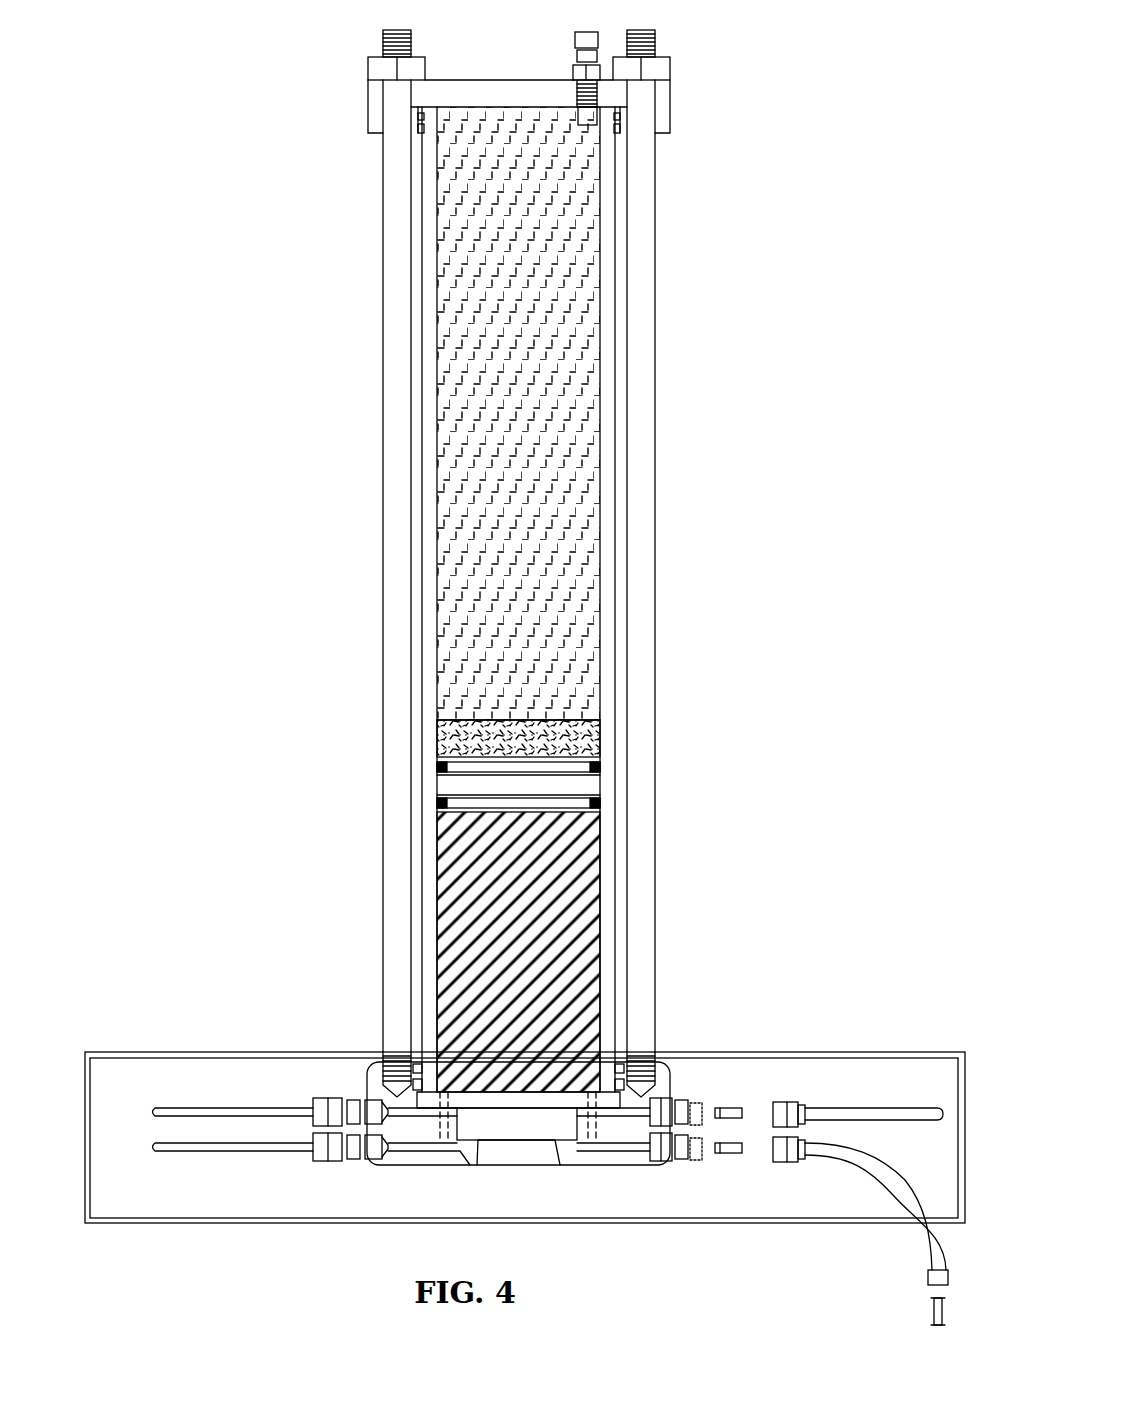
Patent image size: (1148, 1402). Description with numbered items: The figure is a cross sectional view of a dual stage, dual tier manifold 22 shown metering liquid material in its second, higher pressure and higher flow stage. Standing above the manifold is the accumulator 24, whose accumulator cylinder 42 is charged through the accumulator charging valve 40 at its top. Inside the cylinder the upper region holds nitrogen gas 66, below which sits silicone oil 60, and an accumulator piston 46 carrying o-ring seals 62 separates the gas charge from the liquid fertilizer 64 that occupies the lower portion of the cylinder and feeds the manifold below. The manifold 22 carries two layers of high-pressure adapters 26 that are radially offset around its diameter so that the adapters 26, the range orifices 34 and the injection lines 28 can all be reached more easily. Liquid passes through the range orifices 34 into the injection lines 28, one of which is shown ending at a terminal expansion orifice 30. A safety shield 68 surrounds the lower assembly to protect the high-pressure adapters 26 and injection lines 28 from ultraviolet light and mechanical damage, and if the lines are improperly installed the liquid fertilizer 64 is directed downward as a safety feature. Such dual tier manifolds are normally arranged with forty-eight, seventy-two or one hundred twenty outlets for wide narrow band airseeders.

The dual tier manifold 22 is at (673, 1092).
The accumulator 24 is at (670, 118).
The high-pressure adapters 26 is at (702, 1103).
The injection lines 28 is at (898, 1178).
The terminal expansion orifice 30 is at (920, 1312).
The range orifices 34 is at (733, 1118).
The accumulator charging valve 40 is at (598, 30).
The accumulator cylinder 42 is at (428, 495).
The accumulator piston 46 is at (600, 785).
The silicone oil 60 is at (440, 742).
The o-ring seals 62 is at (600, 768).
The liquid fertilizer 64 is at (553, 903).
The nitrogen gas 66 is at (582, 515).
The safety shield 68 is at (920, 1056).